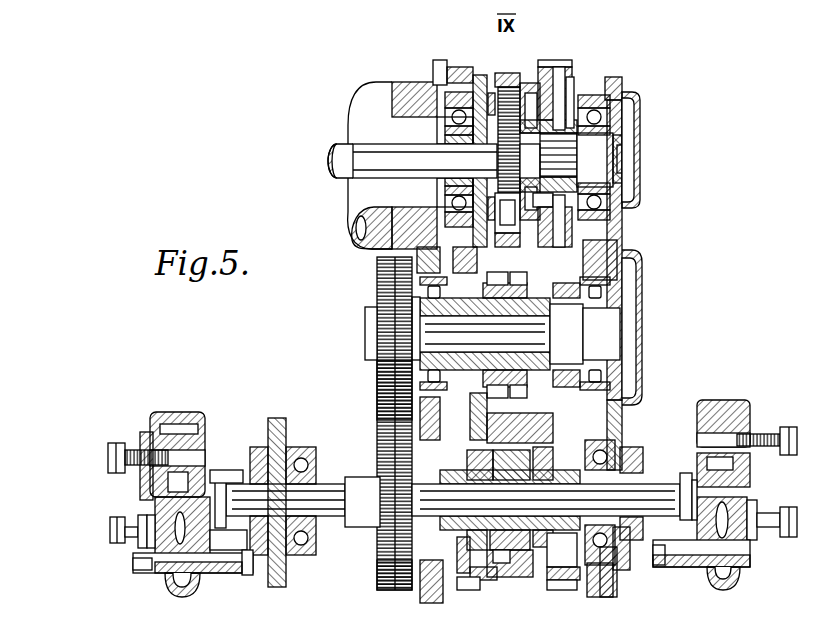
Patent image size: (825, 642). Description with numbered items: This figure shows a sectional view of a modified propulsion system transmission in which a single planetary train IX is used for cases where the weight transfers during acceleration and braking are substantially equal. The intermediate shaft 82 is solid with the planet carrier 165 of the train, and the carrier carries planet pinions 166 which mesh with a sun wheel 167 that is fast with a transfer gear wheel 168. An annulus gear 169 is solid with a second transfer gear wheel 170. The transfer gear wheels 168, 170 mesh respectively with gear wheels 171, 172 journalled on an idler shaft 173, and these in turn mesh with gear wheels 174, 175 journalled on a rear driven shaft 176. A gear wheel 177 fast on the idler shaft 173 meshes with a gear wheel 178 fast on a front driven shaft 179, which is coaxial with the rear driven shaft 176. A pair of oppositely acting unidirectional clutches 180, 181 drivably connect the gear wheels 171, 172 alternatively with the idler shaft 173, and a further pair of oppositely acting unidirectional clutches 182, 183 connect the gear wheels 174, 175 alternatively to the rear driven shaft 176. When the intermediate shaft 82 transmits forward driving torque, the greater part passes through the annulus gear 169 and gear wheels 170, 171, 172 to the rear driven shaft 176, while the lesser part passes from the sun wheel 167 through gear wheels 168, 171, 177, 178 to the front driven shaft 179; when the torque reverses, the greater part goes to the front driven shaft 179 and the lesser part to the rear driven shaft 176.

The intermediate shaft 82 is at (333, 158).
The planet carrier 165 is at (562, 100).
The planet pinions 166 is at (522, 100).
The sun wheel 167 is at (497, 157).
The transfer gear wheel 168 is at (458, 64).
The annulus gear 169 is at (518, 58).
The transfer gear wheel 170 is at (570, 92).
The gear wheel 171 is at (447, 218).
The gear wheel 172 is at (618, 272).
The idler shaft 173 is at (376, 342).
The gear wheel 174 is at (473, 590).
The gear wheel 175 is at (562, 590).
The rear driven shaft 176 is at (644, 492).
The gear wheel 177 is at (378, 381).
The gear wheel 178 is at (380, 588).
The front driven shaft 179 is at (363, 490).
The unidirectional clutch 180 is at (380, 288).
The unidirectional clutch 181 is at (578, 304).
The unidirectional clutch 182 is at (400, 435).
The unidirectional clutch 183 is at (620, 413).